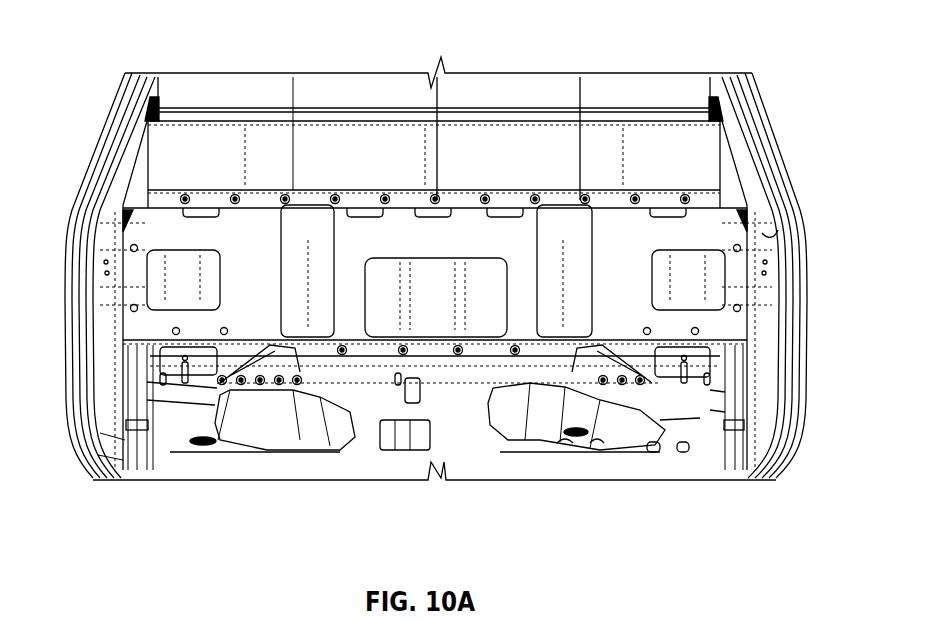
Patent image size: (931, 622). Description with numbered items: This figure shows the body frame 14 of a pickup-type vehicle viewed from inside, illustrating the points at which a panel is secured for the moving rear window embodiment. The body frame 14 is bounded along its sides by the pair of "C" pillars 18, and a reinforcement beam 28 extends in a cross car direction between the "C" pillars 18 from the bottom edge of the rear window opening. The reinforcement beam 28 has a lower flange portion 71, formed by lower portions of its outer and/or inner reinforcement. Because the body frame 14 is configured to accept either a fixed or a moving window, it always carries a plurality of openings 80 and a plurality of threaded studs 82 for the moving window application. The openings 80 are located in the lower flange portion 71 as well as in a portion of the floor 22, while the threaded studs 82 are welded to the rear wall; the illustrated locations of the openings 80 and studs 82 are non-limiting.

The body frame 14 is at (736, 41).
The "C" pillars 18 is at (763, 234).
The floor 22 is at (703, 420).
The reinforcement beam 28 is at (88, 200).
The lower flange portion 71 is at (700, 175).
The openings 80 is at (335, 194).
The threaded studs 82 is at (172, 331).